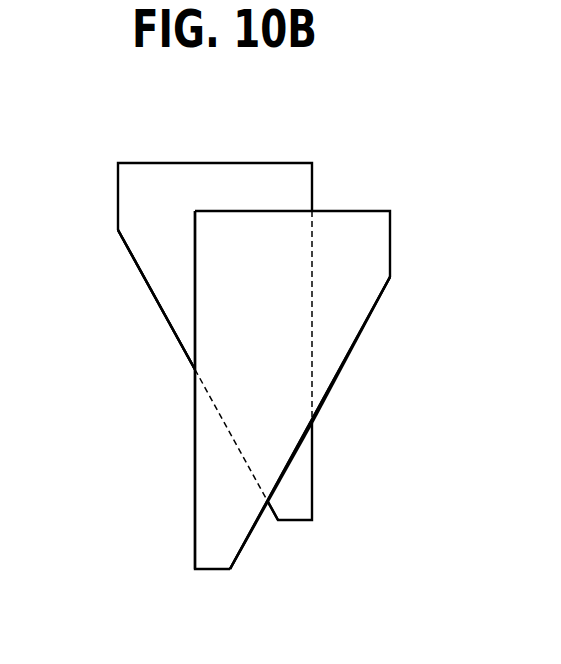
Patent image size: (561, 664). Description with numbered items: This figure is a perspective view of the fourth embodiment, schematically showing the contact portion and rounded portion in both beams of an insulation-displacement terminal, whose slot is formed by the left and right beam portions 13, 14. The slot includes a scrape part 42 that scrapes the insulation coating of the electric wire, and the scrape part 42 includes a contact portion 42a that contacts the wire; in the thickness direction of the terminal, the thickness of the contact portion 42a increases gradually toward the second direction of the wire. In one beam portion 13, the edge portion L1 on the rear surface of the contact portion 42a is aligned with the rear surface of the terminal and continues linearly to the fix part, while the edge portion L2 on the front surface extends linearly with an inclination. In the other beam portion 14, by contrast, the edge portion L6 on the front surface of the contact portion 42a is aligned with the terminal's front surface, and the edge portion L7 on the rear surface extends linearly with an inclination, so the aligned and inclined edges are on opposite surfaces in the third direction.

The right beam portion 14 is at (118, 193).
The left beam portion 13 is at (205, 551).
The scrape part 42 is at (172, 350).
The contact portion 42a is at (185, 318).
The edge portion L1 is at (195, 468).
The edge portion L2 is at (285, 468).
The edge portion L6 is at (312, 265).
The edge portion L7 is at (196, 408).